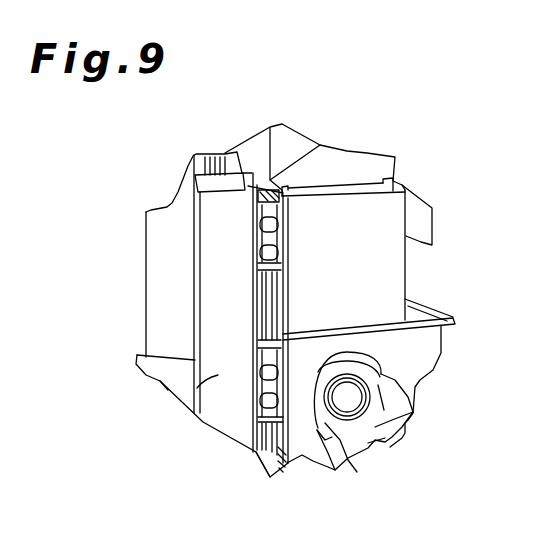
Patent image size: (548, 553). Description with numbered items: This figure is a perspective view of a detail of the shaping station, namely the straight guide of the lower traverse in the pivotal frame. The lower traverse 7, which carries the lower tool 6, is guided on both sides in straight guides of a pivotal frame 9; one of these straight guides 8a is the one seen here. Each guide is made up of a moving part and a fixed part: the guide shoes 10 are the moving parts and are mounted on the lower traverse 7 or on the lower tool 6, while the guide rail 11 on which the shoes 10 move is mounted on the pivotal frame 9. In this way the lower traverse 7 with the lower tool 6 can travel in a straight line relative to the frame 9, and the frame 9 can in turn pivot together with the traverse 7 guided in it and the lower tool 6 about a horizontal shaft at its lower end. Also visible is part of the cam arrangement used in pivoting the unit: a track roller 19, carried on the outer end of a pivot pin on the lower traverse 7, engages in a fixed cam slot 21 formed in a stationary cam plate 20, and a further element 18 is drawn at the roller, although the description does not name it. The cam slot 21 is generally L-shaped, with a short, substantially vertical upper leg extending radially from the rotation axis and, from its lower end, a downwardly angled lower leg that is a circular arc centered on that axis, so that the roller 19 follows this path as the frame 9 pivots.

The lower tool 6 is at (331, 204).
The lower traverse 7 is at (348, 181).
The straight guide 8a is at (242, 307).
The pivotal frame 9 is at (202, 400).
The guide shoes 10 is at (267, 240).
The guide rail 11 is at (255, 452).
The bearing boss 18 is at (348, 400).
The track roller 19 is at (413, 408).
The cam plate 20 is at (407, 347).
The cam slot 21 is at (320, 460).